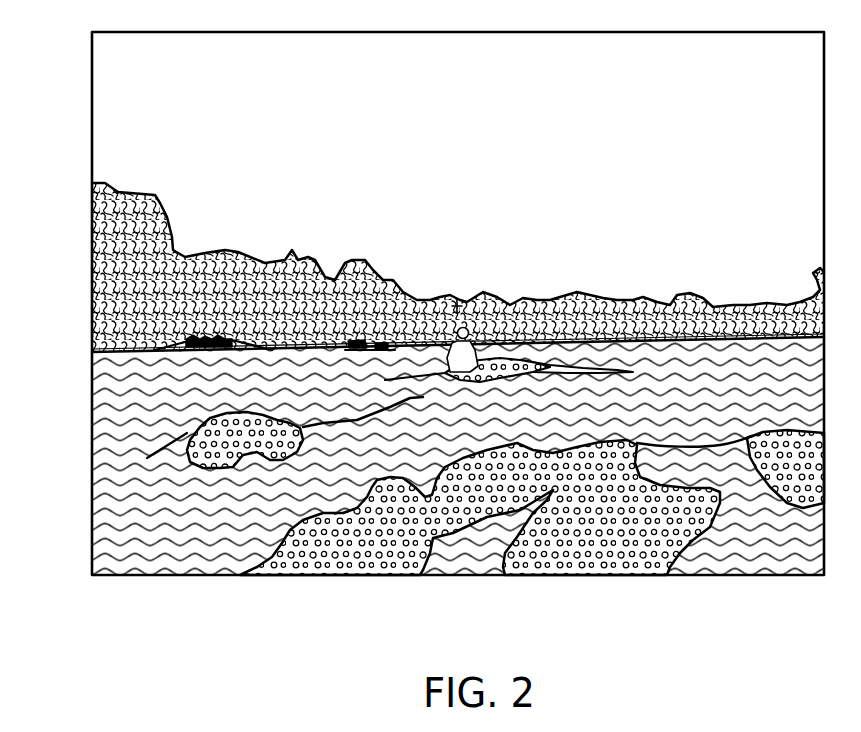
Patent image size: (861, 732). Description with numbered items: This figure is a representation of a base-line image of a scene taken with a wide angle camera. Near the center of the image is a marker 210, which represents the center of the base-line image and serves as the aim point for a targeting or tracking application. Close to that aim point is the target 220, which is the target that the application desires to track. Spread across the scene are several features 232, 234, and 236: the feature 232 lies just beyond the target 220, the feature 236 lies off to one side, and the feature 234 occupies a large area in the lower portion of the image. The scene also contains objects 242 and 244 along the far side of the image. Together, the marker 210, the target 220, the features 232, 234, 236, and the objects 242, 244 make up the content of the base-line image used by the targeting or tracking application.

The marker 210 is at (460, 303).
The target 220 is at (473, 352).
The feature 232 is at (579, 372).
The feature 234 is at (597, 552).
The feature 236 is at (190, 432).
The object 242 is at (196, 334).
The object 244 is at (383, 347).